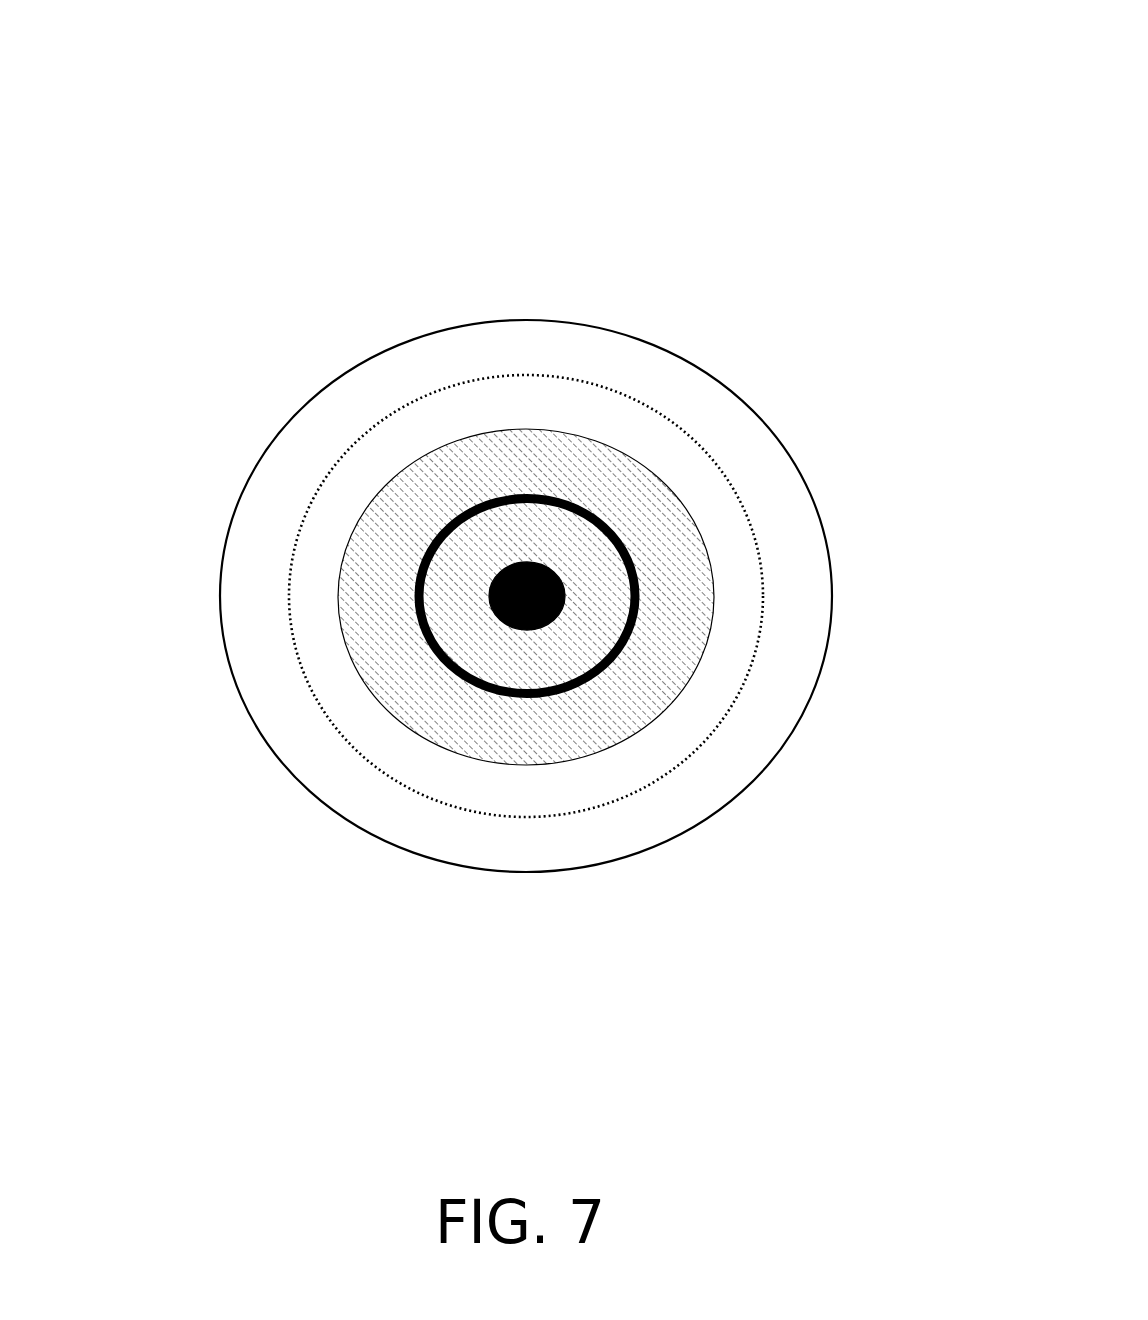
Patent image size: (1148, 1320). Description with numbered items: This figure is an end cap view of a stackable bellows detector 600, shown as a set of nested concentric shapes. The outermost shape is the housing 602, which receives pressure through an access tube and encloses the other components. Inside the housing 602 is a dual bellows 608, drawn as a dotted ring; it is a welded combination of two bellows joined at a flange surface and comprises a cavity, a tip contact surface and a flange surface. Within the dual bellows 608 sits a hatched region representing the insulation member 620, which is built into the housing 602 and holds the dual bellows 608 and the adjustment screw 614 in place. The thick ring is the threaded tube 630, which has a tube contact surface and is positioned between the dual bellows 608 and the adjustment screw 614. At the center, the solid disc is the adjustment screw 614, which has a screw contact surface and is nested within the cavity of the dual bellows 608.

The stackable bellows detector 600 is at (648, 153).
The housing 602 is at (529, 873).
The dual bellows 608 is at (312, 687).
The adjustment screw 614 is at (535, 628).
The insulation member 620 is at (397, 685).
The threaded tube 630 is at (573, 692).